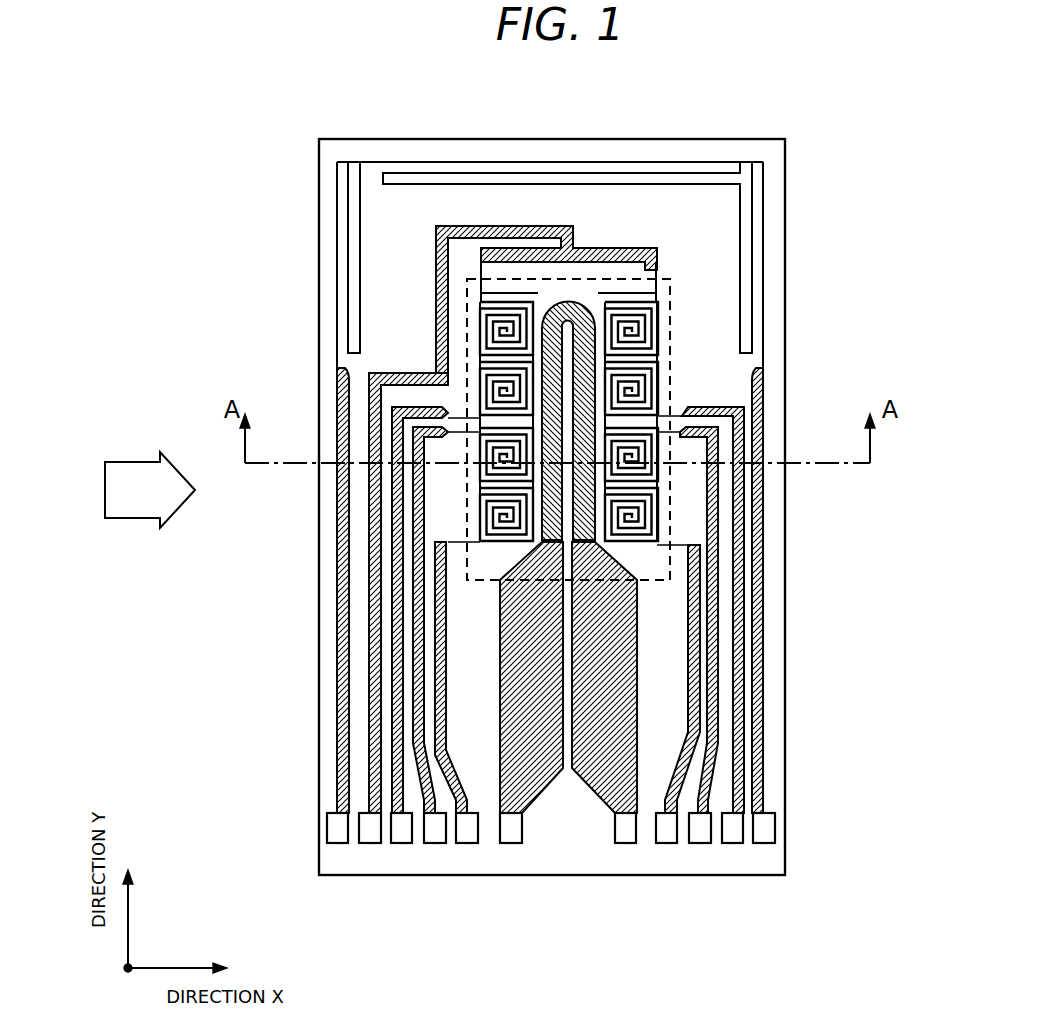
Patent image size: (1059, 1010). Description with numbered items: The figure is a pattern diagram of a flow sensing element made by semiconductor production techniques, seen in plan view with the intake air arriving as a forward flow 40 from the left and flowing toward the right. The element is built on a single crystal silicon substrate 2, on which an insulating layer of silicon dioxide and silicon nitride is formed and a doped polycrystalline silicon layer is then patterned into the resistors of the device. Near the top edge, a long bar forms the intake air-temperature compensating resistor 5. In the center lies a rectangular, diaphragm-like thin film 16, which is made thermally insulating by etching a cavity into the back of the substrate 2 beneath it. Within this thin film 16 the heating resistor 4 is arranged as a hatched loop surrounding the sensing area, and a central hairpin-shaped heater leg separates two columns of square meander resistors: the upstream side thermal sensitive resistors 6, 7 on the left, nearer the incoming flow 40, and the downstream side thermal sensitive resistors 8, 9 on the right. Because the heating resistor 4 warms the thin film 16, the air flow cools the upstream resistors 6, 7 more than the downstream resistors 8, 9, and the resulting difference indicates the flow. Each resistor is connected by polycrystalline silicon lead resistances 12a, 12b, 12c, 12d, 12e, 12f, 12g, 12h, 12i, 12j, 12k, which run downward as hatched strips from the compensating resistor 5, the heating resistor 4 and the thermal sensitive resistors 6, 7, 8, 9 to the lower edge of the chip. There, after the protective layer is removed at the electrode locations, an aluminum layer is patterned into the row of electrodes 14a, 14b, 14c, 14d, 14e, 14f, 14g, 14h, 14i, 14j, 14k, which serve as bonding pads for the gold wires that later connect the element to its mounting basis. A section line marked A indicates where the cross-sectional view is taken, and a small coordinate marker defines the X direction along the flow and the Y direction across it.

The single crystal silicon substrate 2 is at (388, 220).
The heating resistor 4 is at (655, 262).
The intake air-temperature compensating resistor 5 is at (710, 180).
The upstream side thermal sensitive resistor 6 is at (500, 383).
The upstream side thermal sensitive resistor 7 is at (500, 455).
The downstream side thermal sensitive resistor 8 is at (585, 345).
The downstream side thermal sensitive resistor 9 is at (628, 460).
The thin film 16 is at (538, 292).
The forward flow 40 is at (135, 462).
The lead resistance 12a is at (337, 522).
The lead resistance 12b is at (372, 568).
The lead resistance 12c is at (395, 632).
The lead resistance 12d is at (418, 676).
The lead resistance 12e is at (440, 722).
The lead resistance 12f is at (500, 775).
The lead resistance 12g is at (640, 715).
The lead resistance 12h is at (700, 690).
The lead resistance 12i is at (718, 628).
The lead resistance 12j is at (744, 578).
The lead resistance 12k is at (760, 525).
The electrode 14a is at (338, 843).
The electrode 14b is at (370, 843).
The electrode 14c is at (402, 843).
The electrode 14d is at (435, 843).
The electrode 14e is at (467, 843).
The electrode 14f is at (511, 843).
The electrode 14g is at (626, 843).
The electrode 14h is at (666, 843).
The electrode 14i is at (700, 843).
The electrode 14j is at (732, 843).
The electrode 14k is at (764, 843).